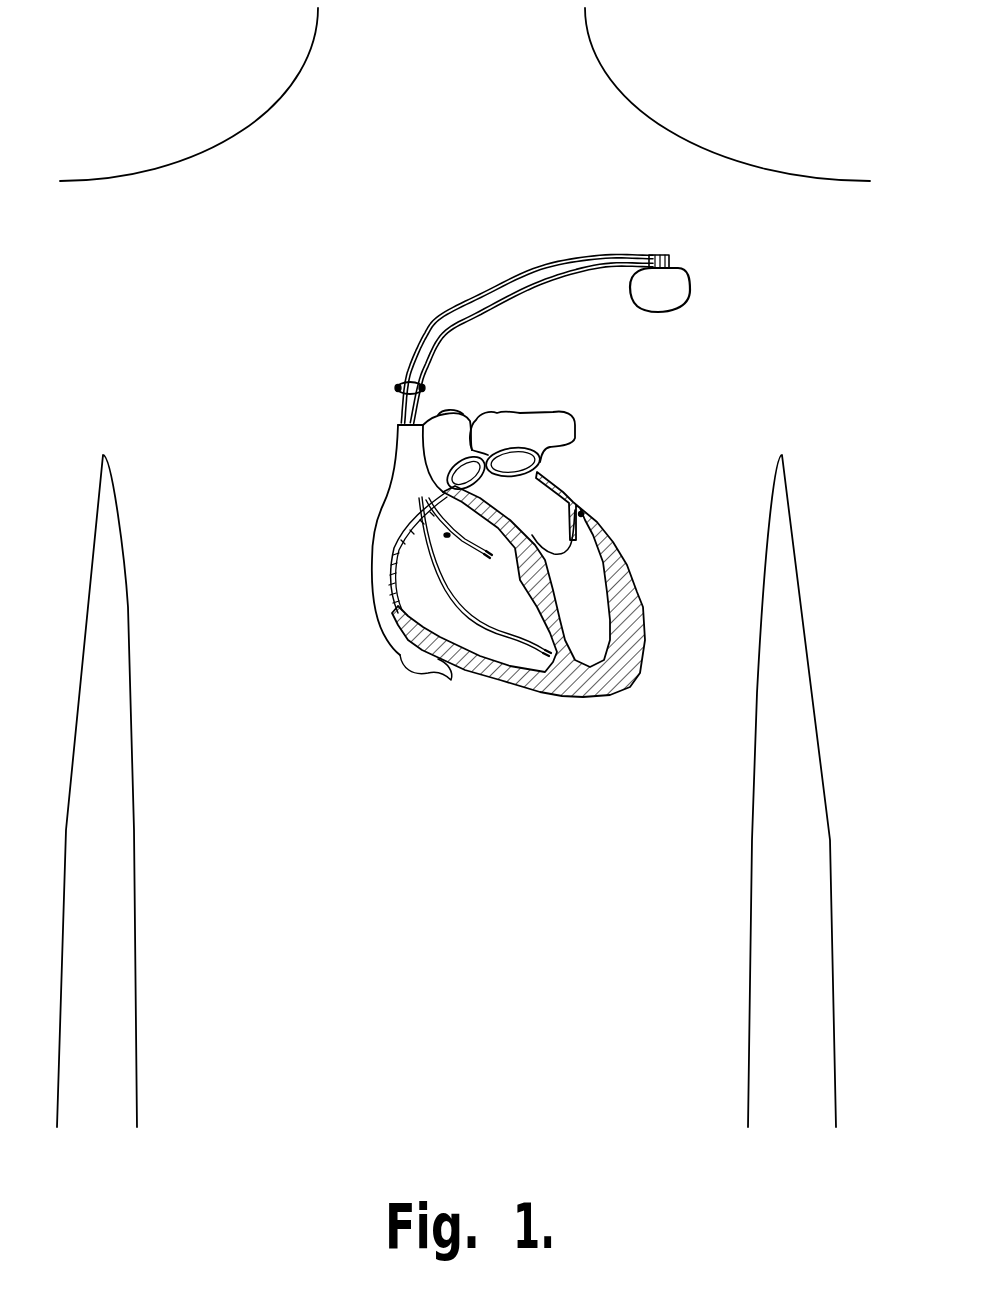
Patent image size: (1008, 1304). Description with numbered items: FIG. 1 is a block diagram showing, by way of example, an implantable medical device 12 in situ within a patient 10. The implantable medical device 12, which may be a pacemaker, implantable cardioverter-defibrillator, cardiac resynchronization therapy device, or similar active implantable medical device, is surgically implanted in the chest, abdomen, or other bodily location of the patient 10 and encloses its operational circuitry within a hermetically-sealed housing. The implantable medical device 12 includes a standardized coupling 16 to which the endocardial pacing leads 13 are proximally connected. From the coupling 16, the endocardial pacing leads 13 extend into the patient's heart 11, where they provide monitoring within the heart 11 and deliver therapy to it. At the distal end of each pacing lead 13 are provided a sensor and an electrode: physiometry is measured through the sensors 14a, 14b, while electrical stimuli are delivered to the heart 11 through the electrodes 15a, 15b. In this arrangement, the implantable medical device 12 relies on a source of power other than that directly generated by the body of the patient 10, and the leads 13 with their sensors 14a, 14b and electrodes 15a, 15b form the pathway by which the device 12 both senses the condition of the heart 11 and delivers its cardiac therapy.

The patient 10 is at (181, 90).
The heart 11 is at (459, 632).
The implantable medical device 12 is at (689, 273).
The endocardial pacing leads 13 is at (397, 388).
The sensor 14a is at (442, 545).
The sensor 14b is at (502, 645).
The electrode 15a is at (483, 558).
The electrode 15b is at (547, 660).
The standardized coupling 16 is at (654, 240).